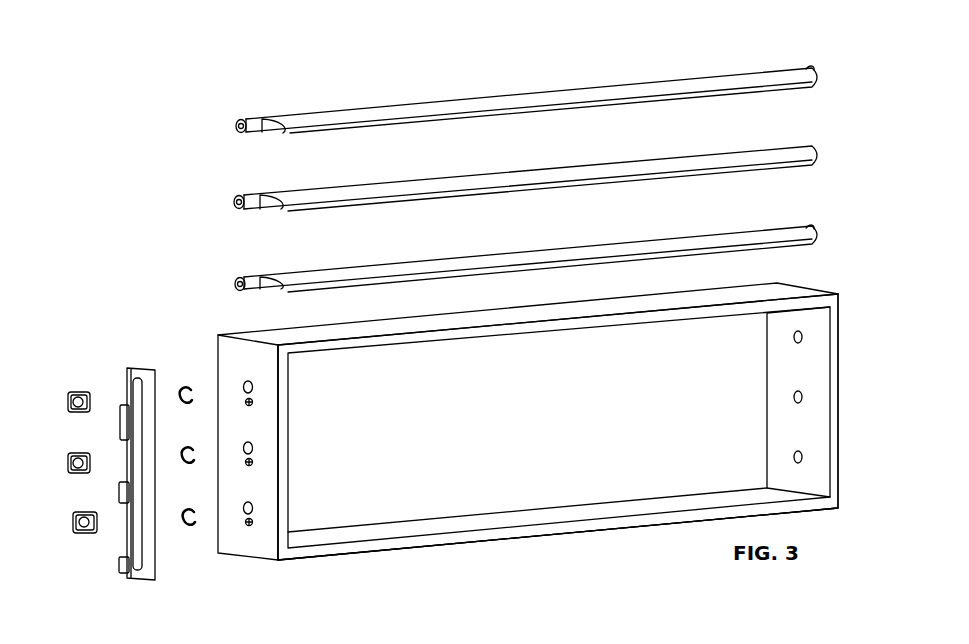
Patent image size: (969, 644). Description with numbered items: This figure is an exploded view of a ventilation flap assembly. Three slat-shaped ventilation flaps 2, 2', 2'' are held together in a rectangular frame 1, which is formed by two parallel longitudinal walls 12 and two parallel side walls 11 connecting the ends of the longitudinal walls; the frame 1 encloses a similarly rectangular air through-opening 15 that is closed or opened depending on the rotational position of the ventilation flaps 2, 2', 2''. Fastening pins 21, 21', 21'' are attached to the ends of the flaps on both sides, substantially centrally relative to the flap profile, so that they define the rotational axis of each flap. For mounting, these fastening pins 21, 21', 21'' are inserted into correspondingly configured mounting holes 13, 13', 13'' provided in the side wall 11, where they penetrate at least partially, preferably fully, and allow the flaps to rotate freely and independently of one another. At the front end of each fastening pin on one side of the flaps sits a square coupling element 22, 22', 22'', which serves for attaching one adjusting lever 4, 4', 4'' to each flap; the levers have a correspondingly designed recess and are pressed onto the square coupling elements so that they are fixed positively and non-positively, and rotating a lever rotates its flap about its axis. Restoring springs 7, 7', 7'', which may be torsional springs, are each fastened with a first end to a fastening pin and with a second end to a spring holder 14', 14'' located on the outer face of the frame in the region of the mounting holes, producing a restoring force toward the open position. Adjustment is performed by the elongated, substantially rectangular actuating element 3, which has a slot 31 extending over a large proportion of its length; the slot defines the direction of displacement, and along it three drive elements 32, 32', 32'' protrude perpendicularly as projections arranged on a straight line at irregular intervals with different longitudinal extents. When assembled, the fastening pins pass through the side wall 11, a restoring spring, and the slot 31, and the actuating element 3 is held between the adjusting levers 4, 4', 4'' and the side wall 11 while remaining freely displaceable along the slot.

The frame 1 is at (504, 566).
The ventilation flap 2 is at (496, 115).
The ventilation flap 2' is at (494, 180).
The ventilation flap 2'' is at (492, 259).
The actuating element 3 is at (117, 346).
The adjusting lever 4 is at (70, 377).
The adjusting lever 4' is at (72, 528).
The adjusting lever 4'' is at (90, 557).
The restoring spring 7 is at (144, 328).
The restoring spring 7' is at (183, 525).
The restoring spring 7'' is at (194, 568).
The side wall 11 is at (228, 360).
The longitudinal wall 12 is at (633, 507).
The mounting hole 13 is at (739, 467).
The mounting hole 13' is at (347, 492).
The mounting hole 13'' is at (523, 527).
The spring holder 14' is at (309, 514).
The spring holder 14'' is at (265, 574).
The air through-opening 15 is at (563, 452).
The fastening pin 21 is at (530, 72).
The fastening pin 21' is at (296, 128).
The fastening pin 21'' is at (545, 150).
The square coupling element 22 is at (232, 90).
The square coupling element 22' is at (212, 241).
The square coupling element 22'' is at (206, 297).
The slot 31 is at (138, 393).
The drive element 32 is at (93, 426).
The drive element 32' is at (109, 555).
The drive element 32'' is at (143, 592).